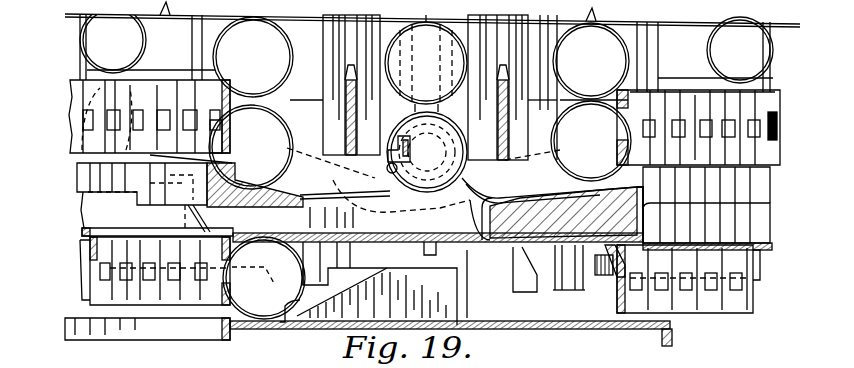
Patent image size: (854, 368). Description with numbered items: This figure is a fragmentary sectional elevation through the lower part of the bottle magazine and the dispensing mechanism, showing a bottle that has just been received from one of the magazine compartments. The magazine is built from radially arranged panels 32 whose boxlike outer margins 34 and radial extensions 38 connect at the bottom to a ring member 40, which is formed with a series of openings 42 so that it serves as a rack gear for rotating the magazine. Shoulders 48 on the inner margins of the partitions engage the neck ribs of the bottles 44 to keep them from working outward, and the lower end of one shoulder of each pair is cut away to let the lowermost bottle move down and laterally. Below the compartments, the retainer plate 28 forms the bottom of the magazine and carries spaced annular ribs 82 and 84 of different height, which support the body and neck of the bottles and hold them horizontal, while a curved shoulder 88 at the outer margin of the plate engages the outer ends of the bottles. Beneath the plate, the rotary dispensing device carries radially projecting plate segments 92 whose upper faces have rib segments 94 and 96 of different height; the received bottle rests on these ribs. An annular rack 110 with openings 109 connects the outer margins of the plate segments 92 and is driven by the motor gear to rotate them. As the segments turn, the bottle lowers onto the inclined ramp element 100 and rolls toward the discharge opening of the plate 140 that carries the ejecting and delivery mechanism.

The retainer plate 28 is at (762, 188).
The radially arranged panels 32 is at (348, 38).
The boxlike outer margins 34 is at (323, 97).
The radial extensions 38 is at (502, 100).
The ring member 40 is at (76, 90).
The openings 42 is at (670, 122).
The bottles 44 is at (760, 40).
The shoulders 48 is at (436, 100).
The annular rib 82 is at (298, 158).
The annular rib 84 is at (520, 145).
The curved shoulder 88 is at (236, 165).
The plate segments 92 is at (569, 278).
The rib segment 94 is at (427, 152).
The rib segment 96 is at (495, 185).
The inclined platform or ramp element 100 is at (305, 322).
The openings 109 is at (115, 265).
The annular rack 110 is at (745, 312).
The plate 140 is at (562, 328).